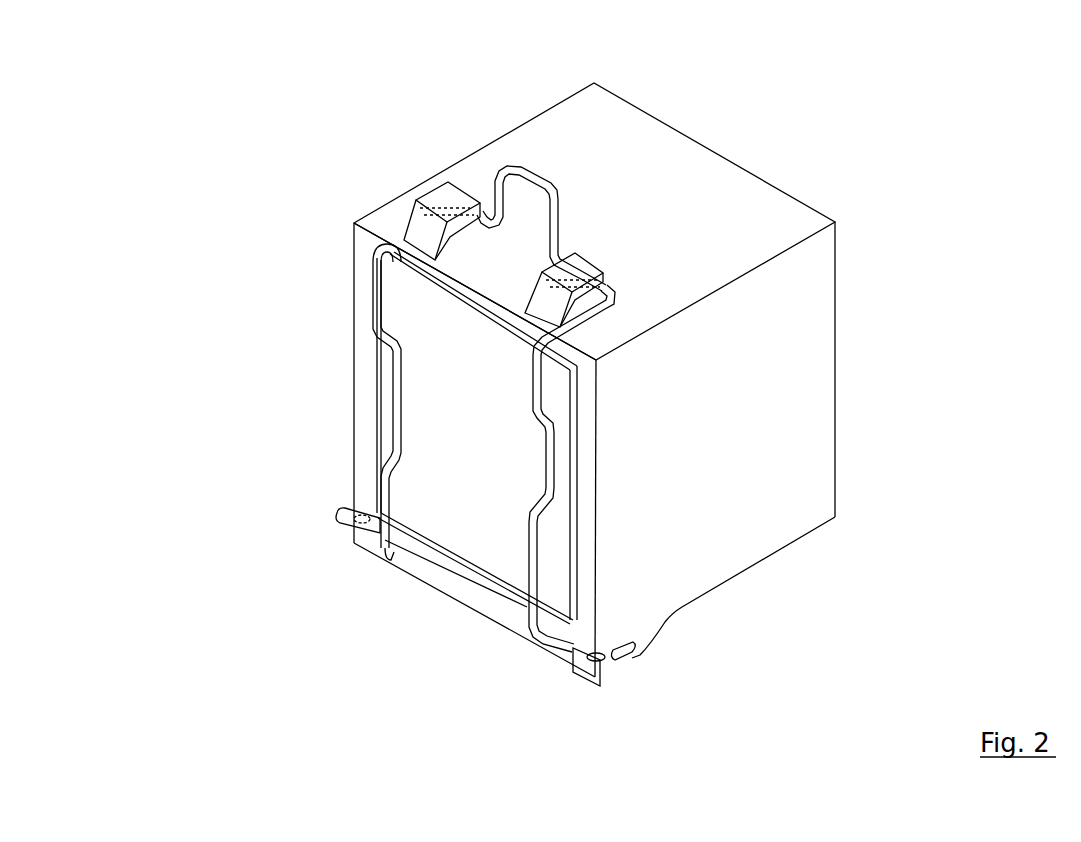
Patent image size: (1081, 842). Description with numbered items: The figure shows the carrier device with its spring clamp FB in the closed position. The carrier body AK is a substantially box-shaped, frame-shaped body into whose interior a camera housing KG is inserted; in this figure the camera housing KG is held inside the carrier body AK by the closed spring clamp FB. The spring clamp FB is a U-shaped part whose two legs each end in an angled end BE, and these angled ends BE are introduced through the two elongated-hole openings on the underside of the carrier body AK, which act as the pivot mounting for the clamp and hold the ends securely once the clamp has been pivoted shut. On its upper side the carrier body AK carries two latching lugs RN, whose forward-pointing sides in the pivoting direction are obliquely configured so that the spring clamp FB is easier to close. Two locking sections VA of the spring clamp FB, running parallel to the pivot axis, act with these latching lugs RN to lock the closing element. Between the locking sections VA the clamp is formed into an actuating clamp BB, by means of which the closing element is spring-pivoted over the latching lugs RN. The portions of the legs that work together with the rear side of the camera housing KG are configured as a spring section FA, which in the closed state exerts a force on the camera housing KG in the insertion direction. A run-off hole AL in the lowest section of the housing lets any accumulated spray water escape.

The carrier body AK is at (797, 333).
The run-off hole AL is at (797, 557).
The spring clamp FB is at (327, 293).
The actuating clamp BB is at (502, 365).
The spring section FA is at (398, 422).
The latching lug RN is at (425, 186).
The locking section VA is at (582, 272).
The camera housing KG is at (410, 498).
The angled end BE is at (345, 513).